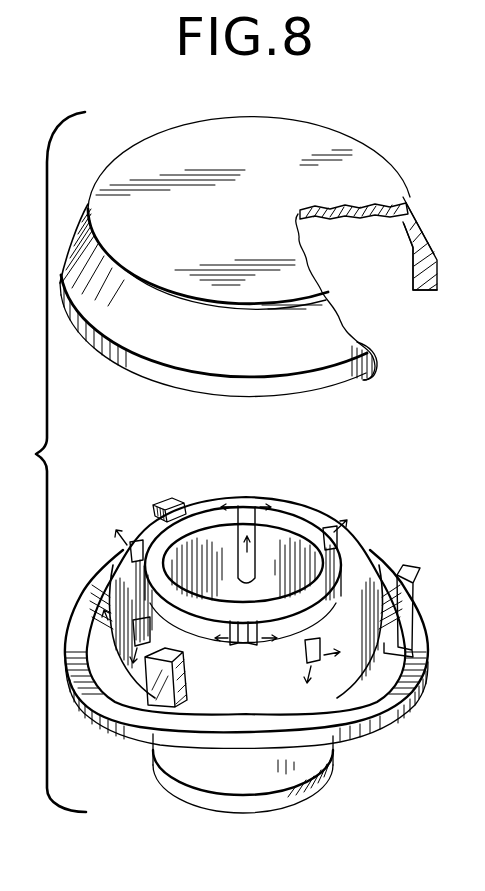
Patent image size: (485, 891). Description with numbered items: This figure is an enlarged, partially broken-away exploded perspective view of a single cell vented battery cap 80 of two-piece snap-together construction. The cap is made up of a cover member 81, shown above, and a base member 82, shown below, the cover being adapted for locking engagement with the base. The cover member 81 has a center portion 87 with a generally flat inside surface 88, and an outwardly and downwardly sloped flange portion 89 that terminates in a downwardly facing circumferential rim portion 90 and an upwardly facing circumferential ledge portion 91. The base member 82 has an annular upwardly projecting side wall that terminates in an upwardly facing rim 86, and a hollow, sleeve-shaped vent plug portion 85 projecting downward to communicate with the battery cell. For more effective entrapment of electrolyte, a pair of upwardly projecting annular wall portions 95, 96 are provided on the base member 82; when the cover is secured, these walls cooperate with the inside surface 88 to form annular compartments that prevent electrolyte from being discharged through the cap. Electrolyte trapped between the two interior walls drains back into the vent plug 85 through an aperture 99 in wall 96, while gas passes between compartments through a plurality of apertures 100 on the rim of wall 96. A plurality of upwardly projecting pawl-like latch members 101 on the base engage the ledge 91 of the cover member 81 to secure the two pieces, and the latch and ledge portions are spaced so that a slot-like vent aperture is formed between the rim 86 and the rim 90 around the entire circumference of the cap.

The single cell battery cap 80 is at (39, 452).
The cover member 81 is at (336, 118).
The base member 82 is at (383, 733).
The vent plug portion 85 is at (307, 767).
The rim 86 is at (407, 674).
The center portion 87 is at (348, 211).
The inside surface 88 is at (300, 213).
The flange portion 89 is at (424, 242).
The rim portion 90 is at (430, 291).
The ledge portion 91 is at (414, 256).
The annular wall portion 95 is at (329, 569).
The annular wall portion 96 is at (368, 570).
The aperture 99 is at (247, 518).
The apertures 100 is at (140, 543).
The latch members 101 is at (150, 697).